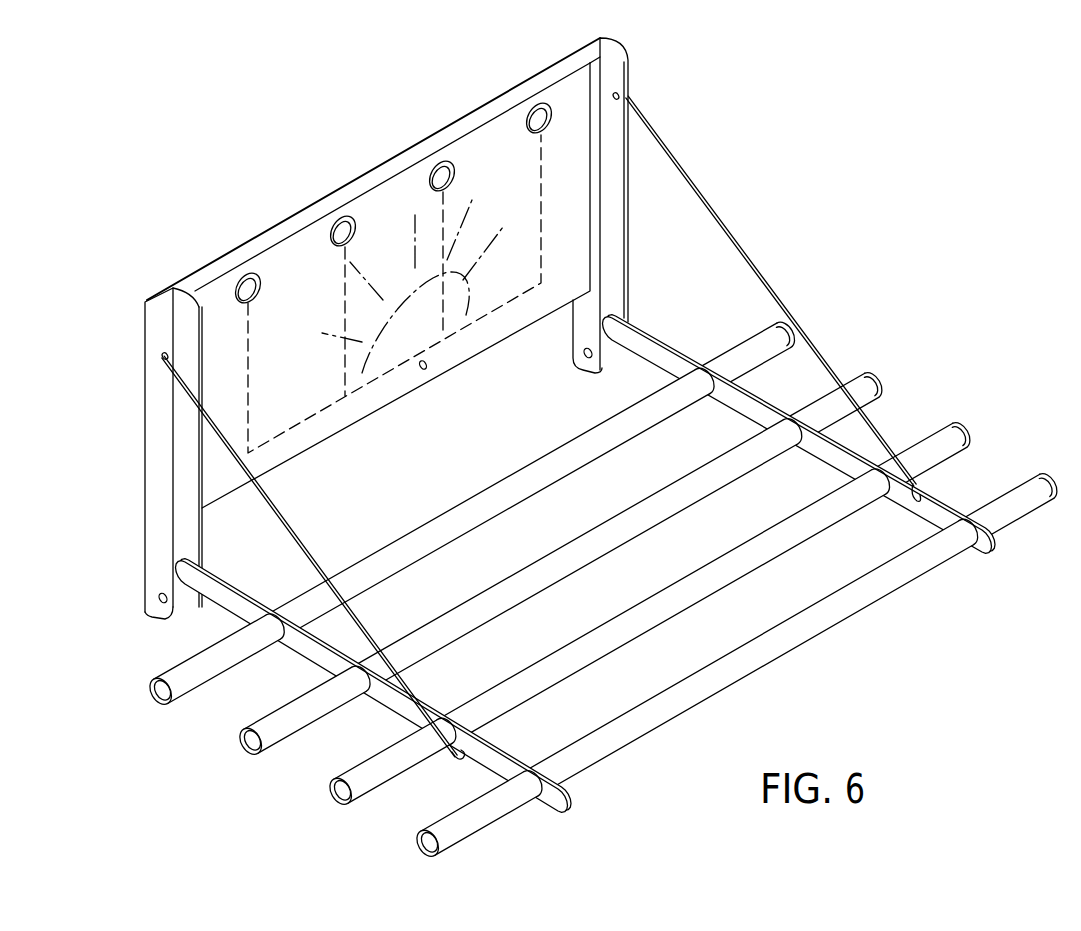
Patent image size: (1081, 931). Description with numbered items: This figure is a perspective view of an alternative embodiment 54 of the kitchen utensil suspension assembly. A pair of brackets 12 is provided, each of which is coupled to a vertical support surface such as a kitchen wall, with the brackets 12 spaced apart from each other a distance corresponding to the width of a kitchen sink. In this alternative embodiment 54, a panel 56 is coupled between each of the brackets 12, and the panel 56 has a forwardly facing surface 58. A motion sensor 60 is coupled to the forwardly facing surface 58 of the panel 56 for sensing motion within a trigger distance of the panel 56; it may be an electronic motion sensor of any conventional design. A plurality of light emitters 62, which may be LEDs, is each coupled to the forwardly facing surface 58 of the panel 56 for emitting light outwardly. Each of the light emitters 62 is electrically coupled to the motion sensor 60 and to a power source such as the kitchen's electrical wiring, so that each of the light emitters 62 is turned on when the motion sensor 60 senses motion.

The bracket 12 is at (147, 300).
The alternative embodiment 54 is at (186, 222).
The panel 56 is at (378, 164).
The forwardly facing surface 58 is at (298, 250).
The motion sensor 60 is at (427, 366).
The light emitter 62 is at (246, 274).